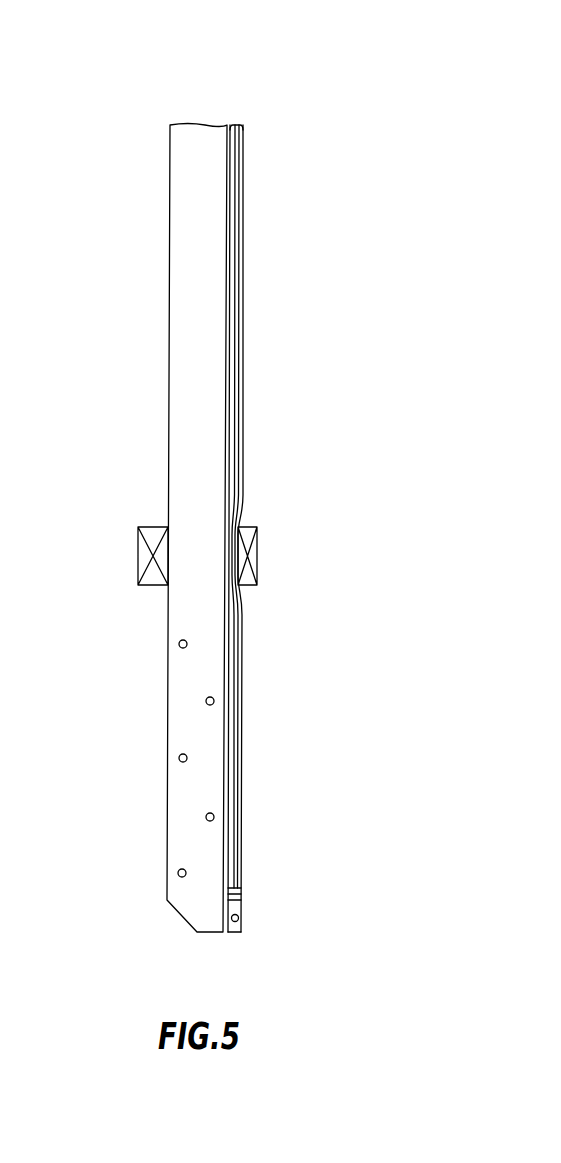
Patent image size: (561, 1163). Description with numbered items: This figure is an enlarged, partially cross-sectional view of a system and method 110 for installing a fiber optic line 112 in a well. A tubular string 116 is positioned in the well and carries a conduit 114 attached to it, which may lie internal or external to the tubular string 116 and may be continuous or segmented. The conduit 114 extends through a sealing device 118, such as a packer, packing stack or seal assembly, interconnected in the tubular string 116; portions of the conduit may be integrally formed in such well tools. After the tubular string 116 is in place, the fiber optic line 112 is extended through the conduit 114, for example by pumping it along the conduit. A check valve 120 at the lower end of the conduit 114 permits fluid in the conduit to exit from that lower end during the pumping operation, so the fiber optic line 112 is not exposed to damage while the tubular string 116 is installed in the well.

The system and method 110 is at (273, 106).
The fiber optic line 112 is at (240, 320).
The conduit 114 is at (243, 378).
The tubular string 116 is at (168, 313).
The sealing device 118 is at (137, 537).
The check valve 120 is at (243, 915).